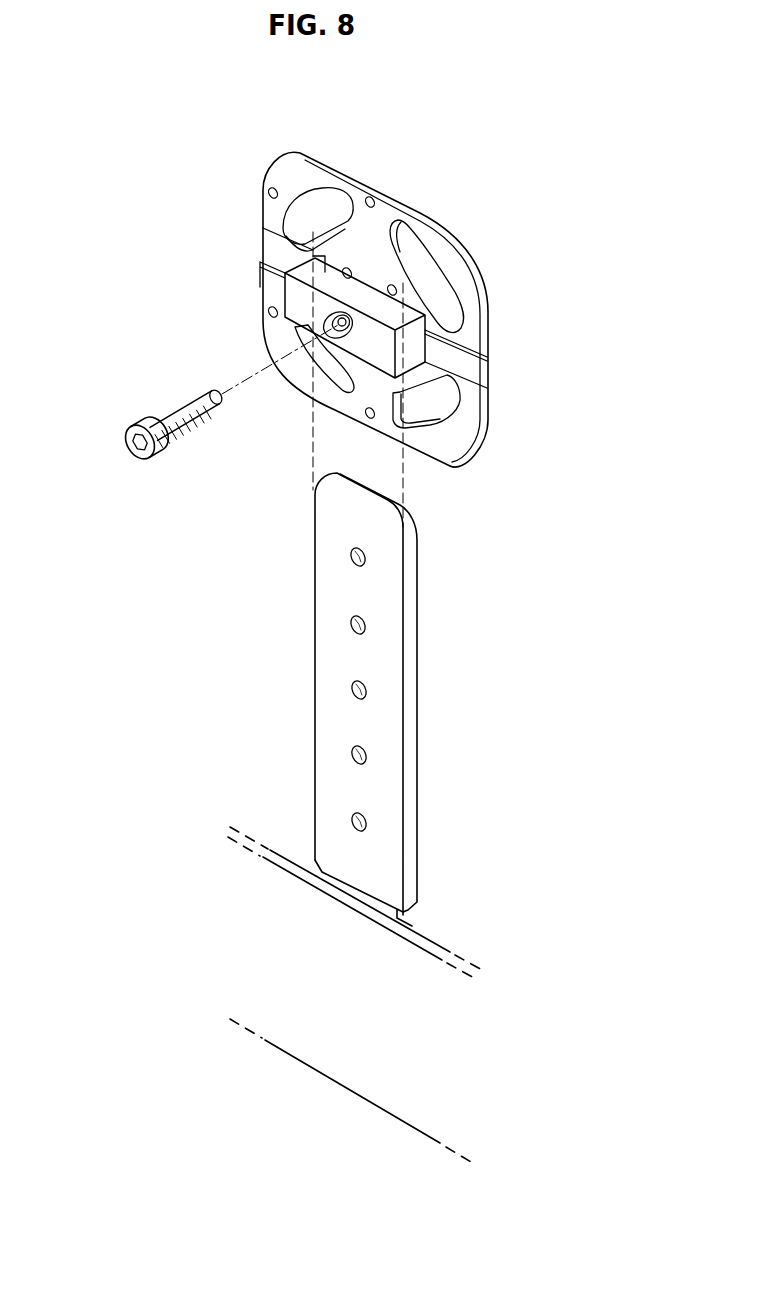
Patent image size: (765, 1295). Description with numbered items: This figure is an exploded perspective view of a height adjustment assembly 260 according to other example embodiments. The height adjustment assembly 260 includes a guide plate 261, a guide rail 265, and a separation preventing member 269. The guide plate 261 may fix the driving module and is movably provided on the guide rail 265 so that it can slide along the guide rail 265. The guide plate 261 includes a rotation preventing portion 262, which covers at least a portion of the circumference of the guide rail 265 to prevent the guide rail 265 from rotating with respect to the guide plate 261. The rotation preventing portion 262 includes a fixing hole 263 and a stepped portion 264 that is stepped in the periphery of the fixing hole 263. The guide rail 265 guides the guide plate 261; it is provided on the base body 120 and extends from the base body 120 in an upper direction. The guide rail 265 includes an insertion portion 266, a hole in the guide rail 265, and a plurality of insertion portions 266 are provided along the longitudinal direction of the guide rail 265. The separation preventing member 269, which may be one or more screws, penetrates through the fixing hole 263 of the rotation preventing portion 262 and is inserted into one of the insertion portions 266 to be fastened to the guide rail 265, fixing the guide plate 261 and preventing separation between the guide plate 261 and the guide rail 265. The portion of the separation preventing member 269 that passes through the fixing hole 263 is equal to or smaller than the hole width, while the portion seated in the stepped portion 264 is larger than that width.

The base body 120 is at (340, 1062).
The height adjustment assembly 260 is at (220, 182).
The guide plate 261 is at (385, 208).
The rotation preventing portion 262 is at (420, 310).
The fixing hole 263 is at (285, 306).
The stepped portion 264 is at (333, 333).
The guide rail 265 is at (395, 707).
The insertion portion 266 is at (355, 627).
The separation preventing member 269 is at (135, 460).